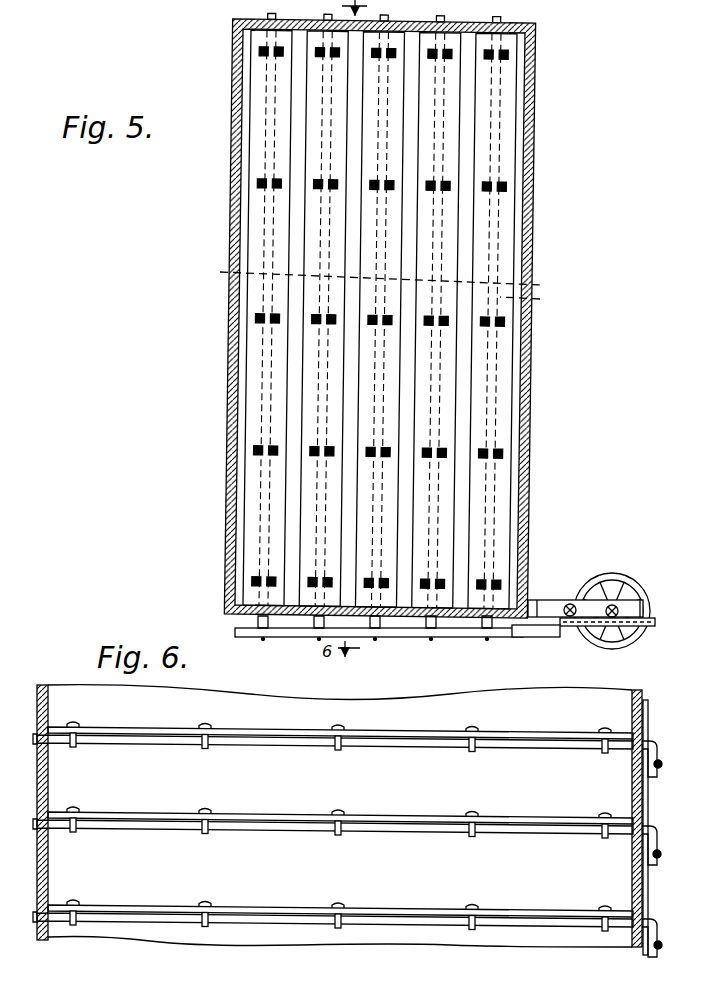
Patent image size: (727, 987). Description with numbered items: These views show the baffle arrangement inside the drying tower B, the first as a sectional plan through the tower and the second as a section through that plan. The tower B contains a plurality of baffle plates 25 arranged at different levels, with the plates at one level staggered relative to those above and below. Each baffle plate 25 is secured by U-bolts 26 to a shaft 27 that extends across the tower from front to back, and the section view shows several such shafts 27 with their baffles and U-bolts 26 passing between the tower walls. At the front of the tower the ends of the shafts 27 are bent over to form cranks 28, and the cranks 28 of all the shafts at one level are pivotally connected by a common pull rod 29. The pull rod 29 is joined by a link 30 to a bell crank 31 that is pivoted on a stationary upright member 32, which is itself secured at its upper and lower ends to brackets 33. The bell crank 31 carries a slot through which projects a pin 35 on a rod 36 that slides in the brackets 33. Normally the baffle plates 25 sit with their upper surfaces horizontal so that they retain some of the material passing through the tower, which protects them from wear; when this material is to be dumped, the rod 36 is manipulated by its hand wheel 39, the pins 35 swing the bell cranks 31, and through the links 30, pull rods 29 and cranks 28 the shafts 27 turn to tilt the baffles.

In FIG. 5, the baffle plates 25 is at (255, 234).
In FIG. 6, the baffle plates 25 is at (280, 772).
In FIG. 5, the U-bolts 26 is at (316, 184).
In FIG. 6, the U-bolts 26 is at (476, 735).
In FIG. 5, the shafts 27 is at (379, 281).
In FIG. 6, the shafts 27 is at (418, 765).
In FIG. 5, the cranks 28 is at (469, 628).
In FIG. 6, the cranks 28 is at (658, 742).
In FIG. 5, the pull rod 29 is at (400, 637).
In FIG. 6, the pull rod 29 is at (663, 766).
In FIG. 5, the link 30 is at (535, 633).
In FIG. 5, the bell crank 31 is at (592, 628).
In FIG. 5, the stationary upright member 32 is at (567, 604).
In FIG. 5, the brackets 33 is at (648, 606).
In FIG. 5, the pins 35 is at (627, 619).
In FIG. 5, the rod 36 is at (614, 605).
In FIG. 5, the hand wheel 39 is at (641, 590).
In FIG. 5, the drying tower B is at (529, 391).
In FIG. 6, the drying tower B is at (392, 945).